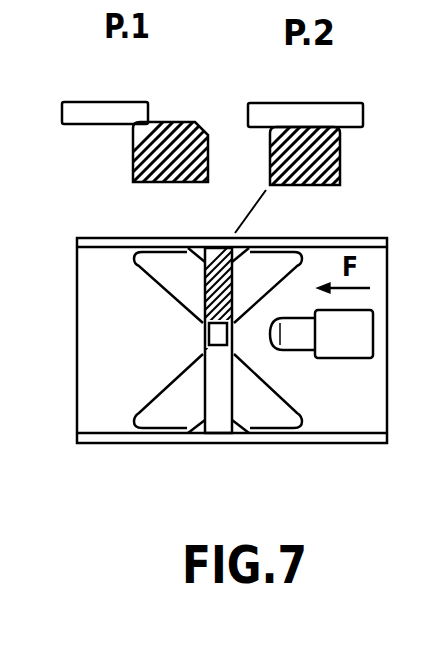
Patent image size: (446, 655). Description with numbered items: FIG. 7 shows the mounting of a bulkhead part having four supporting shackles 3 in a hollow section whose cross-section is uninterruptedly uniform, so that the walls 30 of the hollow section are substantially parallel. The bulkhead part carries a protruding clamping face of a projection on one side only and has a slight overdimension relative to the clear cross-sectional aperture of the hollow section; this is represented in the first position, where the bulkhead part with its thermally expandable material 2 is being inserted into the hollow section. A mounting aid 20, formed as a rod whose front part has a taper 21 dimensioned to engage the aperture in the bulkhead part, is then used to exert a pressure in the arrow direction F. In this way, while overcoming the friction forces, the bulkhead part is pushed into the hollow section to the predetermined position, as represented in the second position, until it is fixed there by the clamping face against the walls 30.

The thermally expandable material 2 is at (185, 125).
The supporting shackle 3 is at (168, 279).
The mounting aid 20 is at (347, 342).
The taper 21 is at (300, 338).
The walls of the hollow section 30 is at (78, 108).